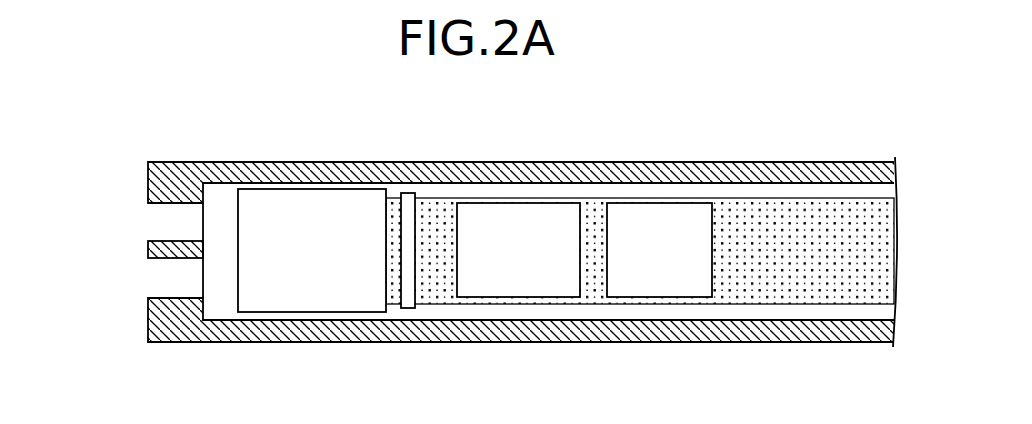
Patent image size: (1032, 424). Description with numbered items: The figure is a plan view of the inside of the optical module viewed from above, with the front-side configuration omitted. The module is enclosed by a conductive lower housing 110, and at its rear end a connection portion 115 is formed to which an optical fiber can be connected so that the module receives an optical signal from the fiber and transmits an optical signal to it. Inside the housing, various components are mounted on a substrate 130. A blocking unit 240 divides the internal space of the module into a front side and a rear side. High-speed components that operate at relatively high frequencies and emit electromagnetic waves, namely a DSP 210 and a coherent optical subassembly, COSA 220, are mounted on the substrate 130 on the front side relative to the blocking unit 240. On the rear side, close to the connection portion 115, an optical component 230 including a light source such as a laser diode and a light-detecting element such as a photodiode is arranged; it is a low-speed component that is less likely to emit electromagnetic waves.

The lower housing 110 is at (238, 333).
The connection portion 115 is at (146, 282).
The substrate 130 is at (772, 288).
The DSP 210 is at (677, 218).
The coherent optical subassembly (COSA) 220 is at (528, 217).
The optical component 230 is at (302, 210).
The blocking unit 240 is at (406, 200).